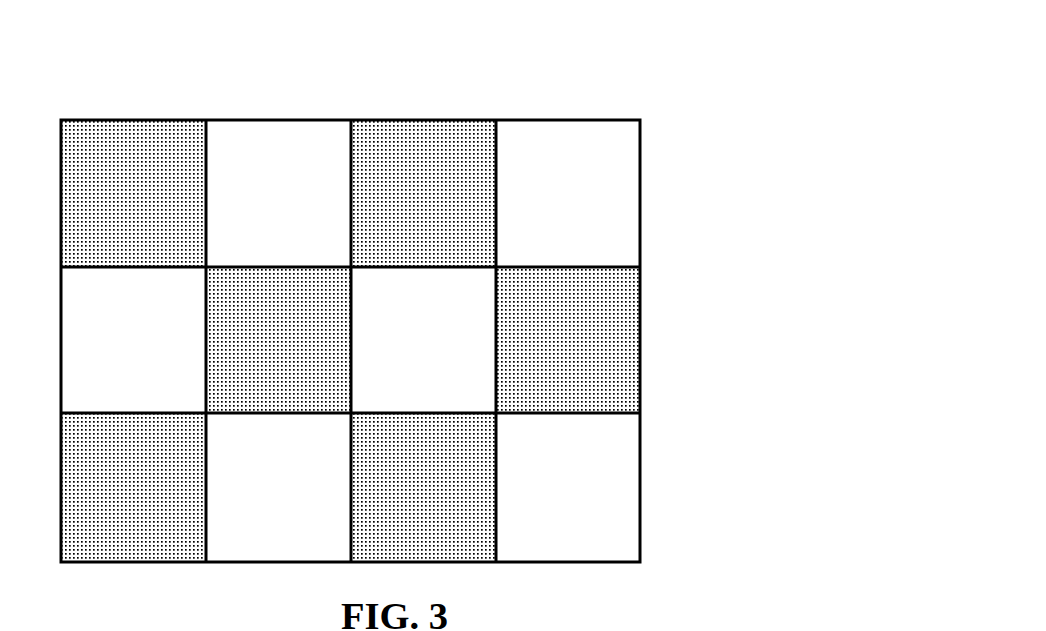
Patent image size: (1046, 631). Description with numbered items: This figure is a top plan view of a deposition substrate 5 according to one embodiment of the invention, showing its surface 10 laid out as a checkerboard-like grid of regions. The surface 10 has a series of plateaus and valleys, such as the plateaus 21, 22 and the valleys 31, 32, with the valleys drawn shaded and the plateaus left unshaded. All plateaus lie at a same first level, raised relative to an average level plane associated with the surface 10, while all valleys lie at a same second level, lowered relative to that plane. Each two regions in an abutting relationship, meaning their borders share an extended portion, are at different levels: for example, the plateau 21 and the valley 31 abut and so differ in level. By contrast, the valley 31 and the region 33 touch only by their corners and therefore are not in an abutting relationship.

The deposition substrate 5 is at (580, 56).
The surface 10 is at (641, 222).
The plateau 21 is at (293, 501).
The plateau 22 is at (583, 501).
The valley 31 is at (148, 501).
The valley 32 is at (429, 501).
The region 33 is at (293, 351).